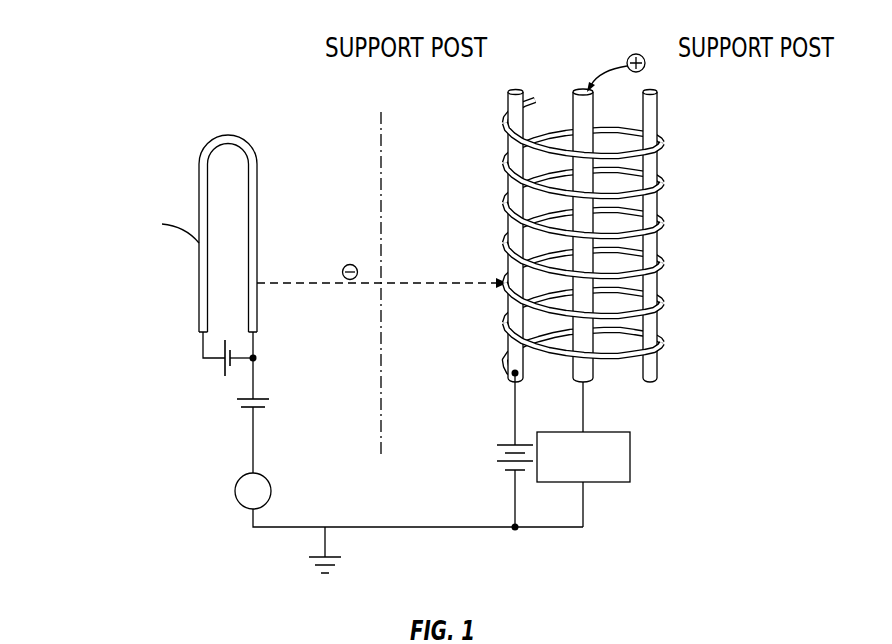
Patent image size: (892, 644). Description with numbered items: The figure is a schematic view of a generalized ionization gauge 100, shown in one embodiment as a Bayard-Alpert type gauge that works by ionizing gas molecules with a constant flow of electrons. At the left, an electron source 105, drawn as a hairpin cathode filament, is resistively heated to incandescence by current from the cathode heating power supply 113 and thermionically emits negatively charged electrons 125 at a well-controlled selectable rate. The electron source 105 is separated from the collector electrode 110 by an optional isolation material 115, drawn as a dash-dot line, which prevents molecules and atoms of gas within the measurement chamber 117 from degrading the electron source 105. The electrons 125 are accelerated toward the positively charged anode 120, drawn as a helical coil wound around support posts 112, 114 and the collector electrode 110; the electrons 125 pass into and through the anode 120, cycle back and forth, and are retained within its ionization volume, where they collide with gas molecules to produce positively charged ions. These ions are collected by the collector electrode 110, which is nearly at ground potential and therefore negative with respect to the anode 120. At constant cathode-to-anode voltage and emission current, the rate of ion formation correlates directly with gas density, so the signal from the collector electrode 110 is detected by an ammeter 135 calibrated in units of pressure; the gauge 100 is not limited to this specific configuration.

The ionization gauge 100 is at (173, 41).
The electron source 105 is at (173, 122).
The collector electrode 110 is at (582, 88).
The support post 112 is at (514, 88).
The cathode heating power supply 113 is at (228, 382).
The support post 114 is at (652, 88).
The isolation material 115 is at (381, 160).
The measurement chamber 117 is at (229, 551).
The anode 120 is at (665, 140).
The electrons 125 is at (462, 277).
The ammeter 135 is at (628, 431).